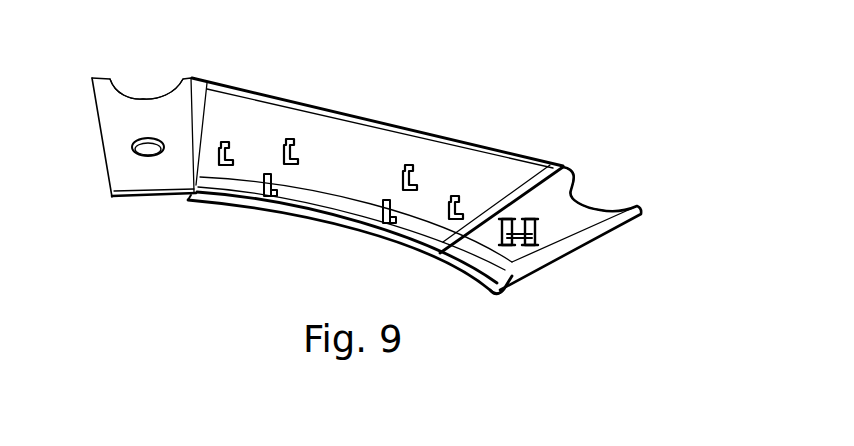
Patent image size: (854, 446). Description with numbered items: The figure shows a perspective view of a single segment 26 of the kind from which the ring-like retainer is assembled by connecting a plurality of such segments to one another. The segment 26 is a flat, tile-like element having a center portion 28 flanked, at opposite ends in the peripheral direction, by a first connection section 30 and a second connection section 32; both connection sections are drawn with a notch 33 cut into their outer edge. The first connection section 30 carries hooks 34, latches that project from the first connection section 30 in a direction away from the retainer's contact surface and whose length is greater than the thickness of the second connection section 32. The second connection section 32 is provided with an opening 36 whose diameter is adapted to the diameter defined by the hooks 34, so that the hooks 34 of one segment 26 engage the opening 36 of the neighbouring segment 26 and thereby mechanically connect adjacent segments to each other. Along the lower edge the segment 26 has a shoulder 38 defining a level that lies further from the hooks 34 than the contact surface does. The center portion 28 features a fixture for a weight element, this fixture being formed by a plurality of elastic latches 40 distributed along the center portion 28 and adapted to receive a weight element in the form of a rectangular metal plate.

The segment 26 is at (400, 179).
The center portion 28 is at (357, 150).
The first connection section 30 is at (565, 203).
The second connection section 32 is at (144, 147).
The notch 33 is at (118, 81).
The hooks 34 is at (540, 243).
The opening 36 is at (150, 153).
The shoulder 38 is at (510, 287).
The elastic latches 40 is at (221, 140).